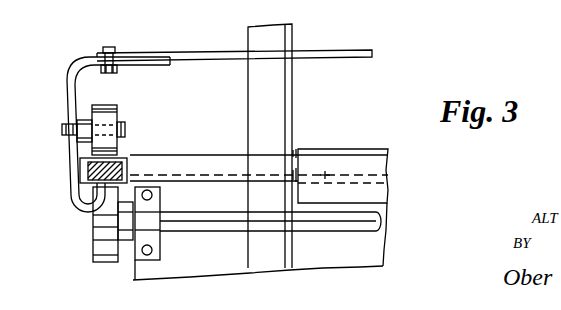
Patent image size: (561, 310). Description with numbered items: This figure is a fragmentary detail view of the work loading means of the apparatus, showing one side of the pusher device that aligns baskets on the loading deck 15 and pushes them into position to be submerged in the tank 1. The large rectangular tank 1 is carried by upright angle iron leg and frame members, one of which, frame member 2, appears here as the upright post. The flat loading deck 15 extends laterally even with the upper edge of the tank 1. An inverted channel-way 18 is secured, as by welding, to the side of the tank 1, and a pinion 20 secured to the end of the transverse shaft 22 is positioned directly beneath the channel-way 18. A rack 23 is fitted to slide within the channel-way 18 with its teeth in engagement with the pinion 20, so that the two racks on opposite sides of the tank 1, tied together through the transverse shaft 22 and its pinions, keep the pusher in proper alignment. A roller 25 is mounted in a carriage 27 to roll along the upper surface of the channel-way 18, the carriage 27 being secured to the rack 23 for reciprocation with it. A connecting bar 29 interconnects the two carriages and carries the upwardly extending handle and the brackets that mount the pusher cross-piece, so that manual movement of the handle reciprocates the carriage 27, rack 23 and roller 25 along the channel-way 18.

The tank 1 is at (215, 262).
The upright angle iron leg and frame member 2 is at (275, 115).
The loading deck 15 is at (348, 148).
The inverted channel-way 18 is at (128, 157).
The pinion 20 is at (97, 245).
The transverse shaft 22 is at (332, 222).
The rack 23 is at (93, 173).
The roller 25 is at (107, 115).
The carriage 27 is at (67, 93).
The connecting bar 29 is at (333, 50).